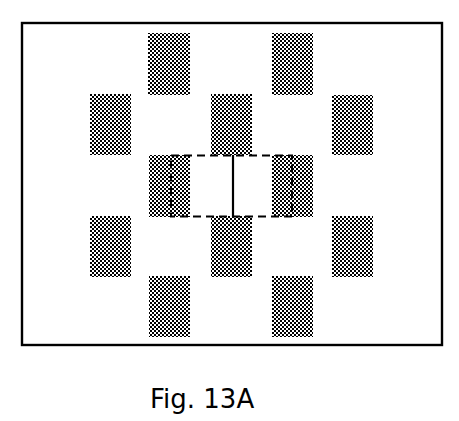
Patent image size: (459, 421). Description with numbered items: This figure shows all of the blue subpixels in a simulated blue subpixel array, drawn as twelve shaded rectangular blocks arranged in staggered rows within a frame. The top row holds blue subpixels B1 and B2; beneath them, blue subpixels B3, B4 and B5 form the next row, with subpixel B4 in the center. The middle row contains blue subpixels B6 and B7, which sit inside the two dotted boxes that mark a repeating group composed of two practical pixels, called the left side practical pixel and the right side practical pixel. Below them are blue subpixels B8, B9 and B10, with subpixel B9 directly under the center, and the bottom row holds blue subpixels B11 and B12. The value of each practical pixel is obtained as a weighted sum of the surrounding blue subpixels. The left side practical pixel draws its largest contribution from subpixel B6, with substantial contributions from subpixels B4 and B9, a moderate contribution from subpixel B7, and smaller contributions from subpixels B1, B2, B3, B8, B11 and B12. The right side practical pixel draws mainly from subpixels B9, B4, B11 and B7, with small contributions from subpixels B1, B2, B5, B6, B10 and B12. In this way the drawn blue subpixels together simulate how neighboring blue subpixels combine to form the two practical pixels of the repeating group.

The blue subpixel B1 is at (169, 64).
The blue subpixel B2 is at (292, 64).
The blue subpixel B3 is at (110, 124).
The blue subpixel B4 is at (231, 124).
The blue subpixel B5 is at (352, 125).
The blue subpixel B6 is at (169, 186).
The blue subpixel B7 is at (292, 186).
The blue subpixel B8 is at (110, 246).
The blue subpixel B9 is at (231, 246).
The blue subpixel B10 is at (352, 246).
The blue subpixel B11 is at (169, 306).
The blue subpixel B12 is at (292, 306).